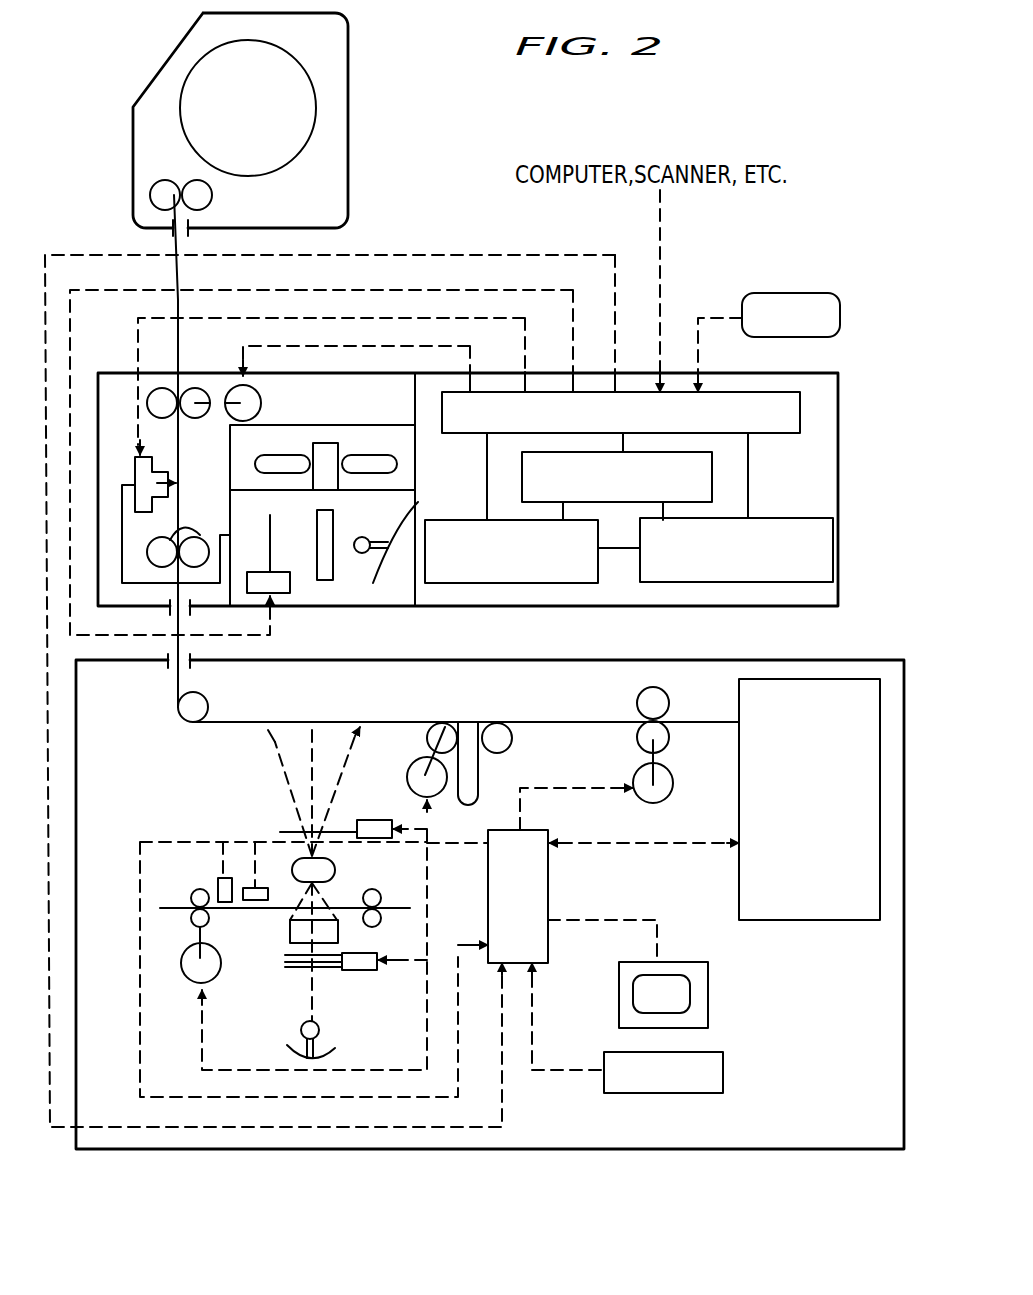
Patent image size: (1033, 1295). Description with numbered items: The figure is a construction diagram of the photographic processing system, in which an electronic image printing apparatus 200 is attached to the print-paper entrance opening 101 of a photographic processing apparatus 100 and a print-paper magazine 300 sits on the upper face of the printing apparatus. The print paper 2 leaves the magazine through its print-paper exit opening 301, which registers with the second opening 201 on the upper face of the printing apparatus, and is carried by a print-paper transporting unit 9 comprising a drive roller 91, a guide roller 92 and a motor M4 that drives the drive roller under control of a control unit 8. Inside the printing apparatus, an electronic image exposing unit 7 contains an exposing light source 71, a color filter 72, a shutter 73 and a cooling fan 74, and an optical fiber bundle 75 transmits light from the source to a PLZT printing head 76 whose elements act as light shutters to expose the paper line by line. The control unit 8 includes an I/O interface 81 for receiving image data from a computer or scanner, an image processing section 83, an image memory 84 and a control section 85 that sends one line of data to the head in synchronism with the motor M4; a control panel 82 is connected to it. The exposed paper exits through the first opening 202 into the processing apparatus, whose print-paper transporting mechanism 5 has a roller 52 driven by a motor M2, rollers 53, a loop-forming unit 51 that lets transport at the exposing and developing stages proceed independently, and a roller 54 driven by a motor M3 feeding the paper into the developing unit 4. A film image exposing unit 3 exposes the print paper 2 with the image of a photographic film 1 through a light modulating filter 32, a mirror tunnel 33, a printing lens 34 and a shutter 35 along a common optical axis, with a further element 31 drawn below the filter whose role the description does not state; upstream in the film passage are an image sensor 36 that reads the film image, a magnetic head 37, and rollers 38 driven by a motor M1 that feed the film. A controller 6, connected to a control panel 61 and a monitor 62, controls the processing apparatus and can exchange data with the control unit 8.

The print-paper magazine 300 is at (353, 54).
The print-paper exit opening 301 is at (190, 218).
The print paper 2 is at (390, 722).
The photographic processing apparatus 100 is at (895, 642).
The electronic image printing apparatus 200 is at (834, 366).
The second opening 201 is at (168, 371).
The print-paper transporting unit 9 is at (183, 426).
The drive roller 91 is at (197, 395).
The motor M4 is at (261, 403).
The PLZT printing head 76 is at (132, 462).
The guide roller 92 is at (178, 530).
The optical fiber bundle 75 is at (130, 583).
The print-paper entrance opening 101 is at (168, 672).
The first opening 202 is at (190, 608).
The electronic image exposing unit 7 is at (402, 586).
The cooling fan 74 is at (332, 450).
The shutter 73 is at (271, 556).
The color filter 72 is at (333, 580).
The exposing light source 71 is at (418, 502).
The I/O interface 81 is at (790, 435).
The control section 85 is at (700, 483).
The image memory 84 is at (533, 583).
The image processing section 83 is at (730, 583).
The control unit 8 is at (802, 590).
The control panel 82 is at (792, 298).
The roller 52 is at (445, 723).
The rollers 53 is at (497, 723).
The motor M2 is at (413, 768).
The loop-forming unit 51 is at (480, 775).
The print-paper transporting mechanism 5 is at (574, 712).
The roller 54 is at (667, 732).
The motor M3 is at (670, 775).
The developing unit 4 is at (749, 875).
The controller 6 is at (490, 888).
The monitor 62 is at (704, 999).
The control panel 61 is at (721, 1067).
The photographic film 1 is at (177, 910).
The film image exposing unit 3 is at (354, 1027).
The magnetic head 37 is at (218, 882).
The image sensor 36 is at (267, 887).
The rollers 38 is at (192, 920).
The motor M1 is at (219, 970).
The printing lens 34 is at (337, 863).
The mirror tunnel 33 is at (290, 932).
The shutter 35 is at (343, 827).
The light modulating filter 32 is at (330, 970).
The mirror 31 is at (298, 1028).